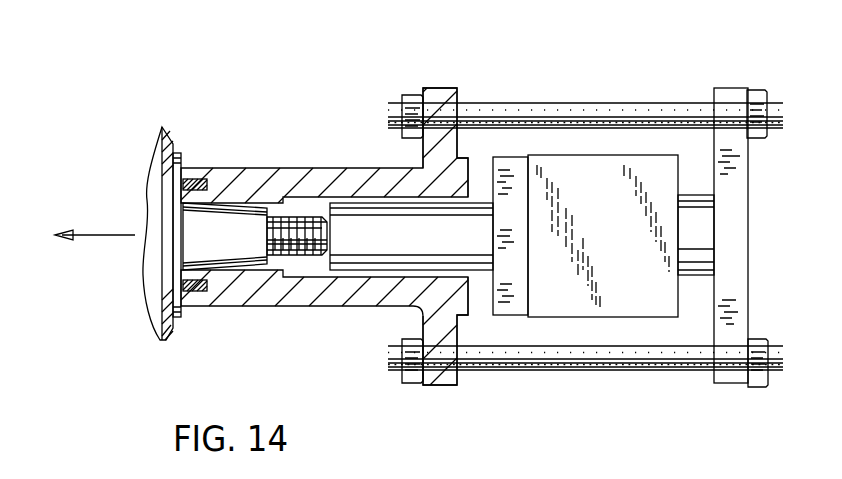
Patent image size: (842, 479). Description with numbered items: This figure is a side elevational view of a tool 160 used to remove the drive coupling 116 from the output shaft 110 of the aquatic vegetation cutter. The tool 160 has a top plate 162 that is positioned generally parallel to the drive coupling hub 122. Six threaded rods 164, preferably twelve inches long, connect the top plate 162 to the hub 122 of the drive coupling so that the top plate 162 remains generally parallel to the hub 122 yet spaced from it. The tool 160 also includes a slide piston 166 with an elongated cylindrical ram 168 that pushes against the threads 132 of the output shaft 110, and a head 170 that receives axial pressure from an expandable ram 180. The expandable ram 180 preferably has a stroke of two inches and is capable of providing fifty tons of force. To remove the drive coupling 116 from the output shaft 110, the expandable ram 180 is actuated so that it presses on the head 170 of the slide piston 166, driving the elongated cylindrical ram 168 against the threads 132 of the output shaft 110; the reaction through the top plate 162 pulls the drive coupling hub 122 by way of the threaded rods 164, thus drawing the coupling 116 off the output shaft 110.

The output shaft 110 is at (220, 222).
The drive coupling 116 is at (300, 293).
The drive coupling hub 122 is at (445, 145).
The threads 132 is at (296, 225).
The tool 160 is at (531, 70).
The top plate 162 is at (742, 203).
The threaded rods 164 is at (568, 108).
The slide piston 166 is at (478, 258).
The elongated cylindrical ram 168 is at (430, 244).
The head 170 is at (515, 160).
The expandable ram 180 is at (635, 244).